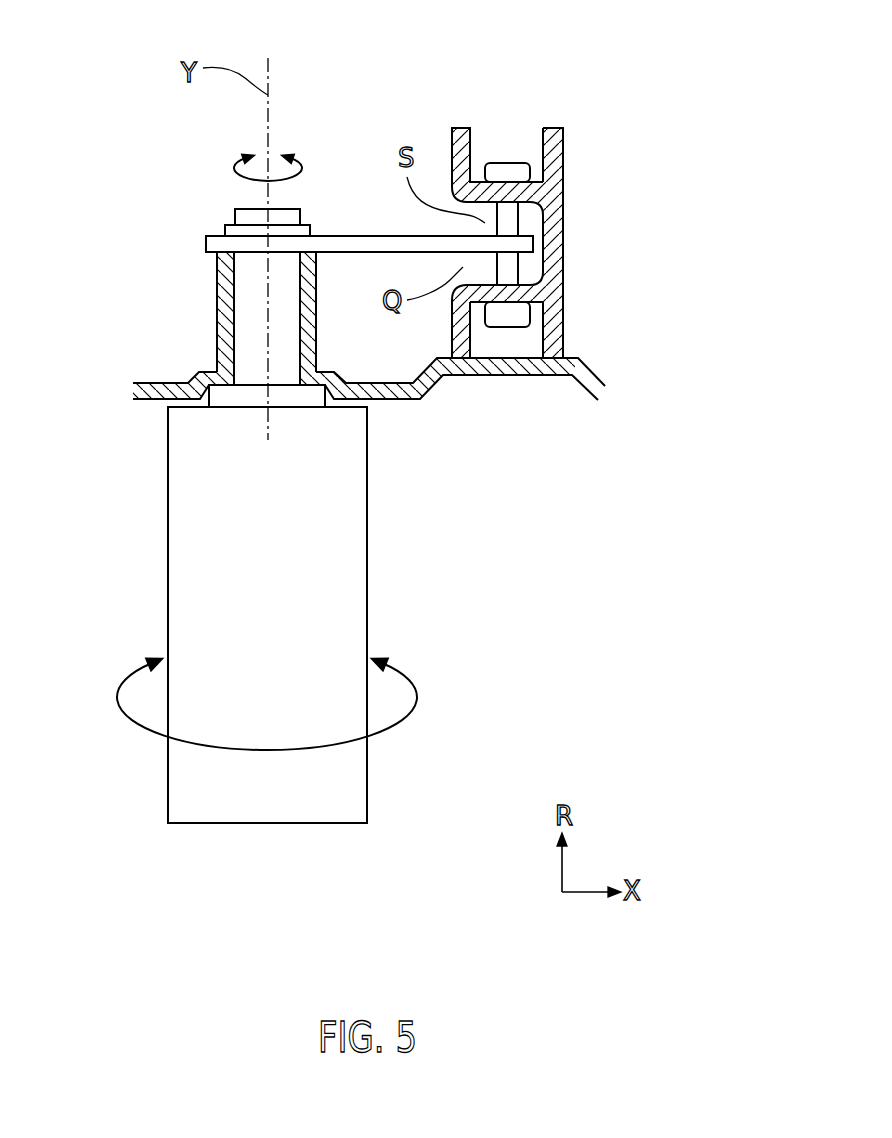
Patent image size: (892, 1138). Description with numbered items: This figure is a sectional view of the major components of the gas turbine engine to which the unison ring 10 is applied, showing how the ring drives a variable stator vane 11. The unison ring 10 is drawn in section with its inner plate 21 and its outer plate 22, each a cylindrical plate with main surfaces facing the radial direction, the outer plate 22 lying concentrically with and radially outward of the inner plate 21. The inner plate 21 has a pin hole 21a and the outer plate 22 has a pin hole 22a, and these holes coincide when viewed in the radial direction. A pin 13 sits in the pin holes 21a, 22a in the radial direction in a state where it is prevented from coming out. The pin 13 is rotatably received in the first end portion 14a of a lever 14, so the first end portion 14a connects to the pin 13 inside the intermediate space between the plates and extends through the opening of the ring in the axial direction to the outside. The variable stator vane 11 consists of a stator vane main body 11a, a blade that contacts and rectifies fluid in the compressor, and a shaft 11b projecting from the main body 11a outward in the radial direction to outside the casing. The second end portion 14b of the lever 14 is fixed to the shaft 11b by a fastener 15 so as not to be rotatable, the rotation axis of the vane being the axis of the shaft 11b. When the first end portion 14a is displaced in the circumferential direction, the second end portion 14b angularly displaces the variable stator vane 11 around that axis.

The unison ring 10 is at (559, 231).
The variable stator vane 11 is at (340, 596).
The stator vane main body 11a is at (168, 575).
The shaft 11b is at (248, 320).
The pin 13 is at (510, 222).
The lever 14 is at (383, 207).
The first end portion 14a is at (528, 243).
The second end portion 14b is at (206, 244).
The fastener 15 is at (248, 214).
The inner plate 21 is at (481, 303).
The pin hole 21a is at (547, 298).
The outer plate 22 is at (477, 182).
The pin hole 22a is at (547, 192).